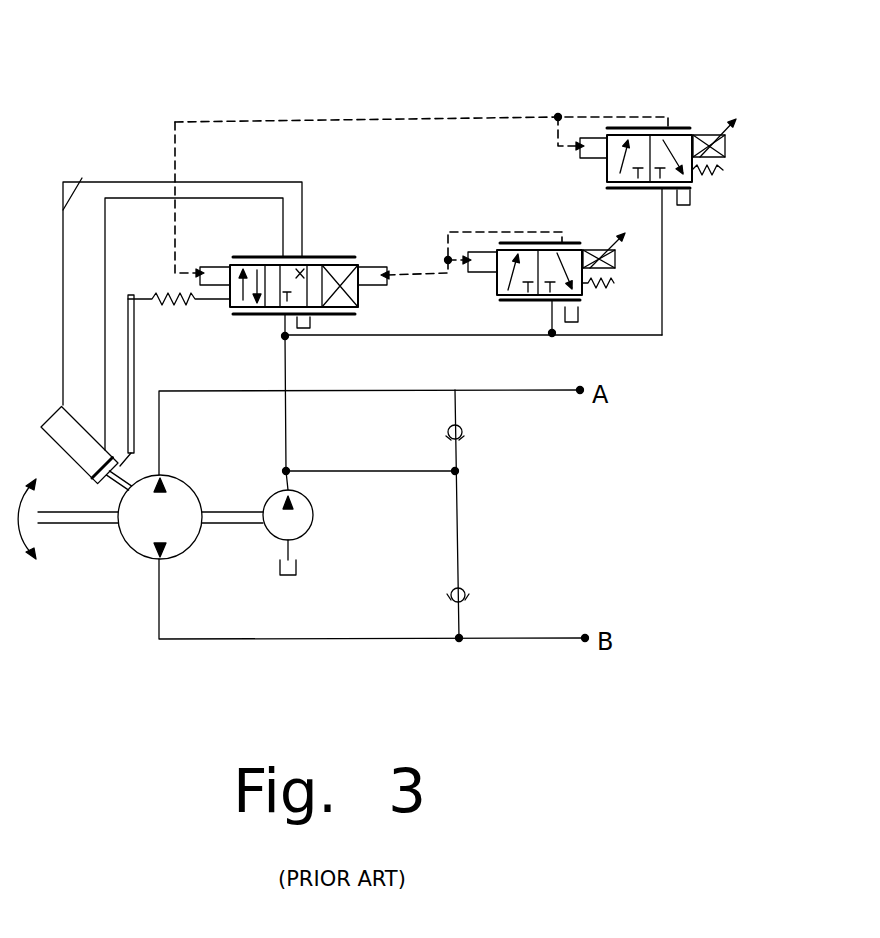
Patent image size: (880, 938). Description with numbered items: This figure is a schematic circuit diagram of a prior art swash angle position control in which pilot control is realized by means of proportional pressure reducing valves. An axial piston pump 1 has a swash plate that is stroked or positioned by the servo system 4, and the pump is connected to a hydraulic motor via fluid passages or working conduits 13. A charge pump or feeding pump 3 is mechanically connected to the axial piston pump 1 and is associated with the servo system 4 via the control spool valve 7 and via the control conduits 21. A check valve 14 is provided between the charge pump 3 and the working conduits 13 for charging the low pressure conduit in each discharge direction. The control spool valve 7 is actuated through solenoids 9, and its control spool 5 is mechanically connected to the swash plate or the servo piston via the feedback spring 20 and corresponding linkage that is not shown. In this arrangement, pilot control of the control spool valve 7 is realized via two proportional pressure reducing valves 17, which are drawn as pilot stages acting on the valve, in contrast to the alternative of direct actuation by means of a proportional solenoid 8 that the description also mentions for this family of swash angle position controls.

The axial piston pump 1 is at (142, 560).
The charge pump 3 is at (310, 527).
The servo system 4 is at (78, 406).
The control spool 5 is at (365, 300).
The control spool valve 7 is at (343, 257).
The proportional solenoid 8 is at (725, 147).
The solenoids 9 is at (212, 263).
The working conduits 13 is at (527, 637).
The check valve 14 is at (463, 590).
The proportional pressure reducing valves 17 is at (523, 228).
The feedback spring 20 is at (180, 308).
The control conduits 21 is at (115, 198).